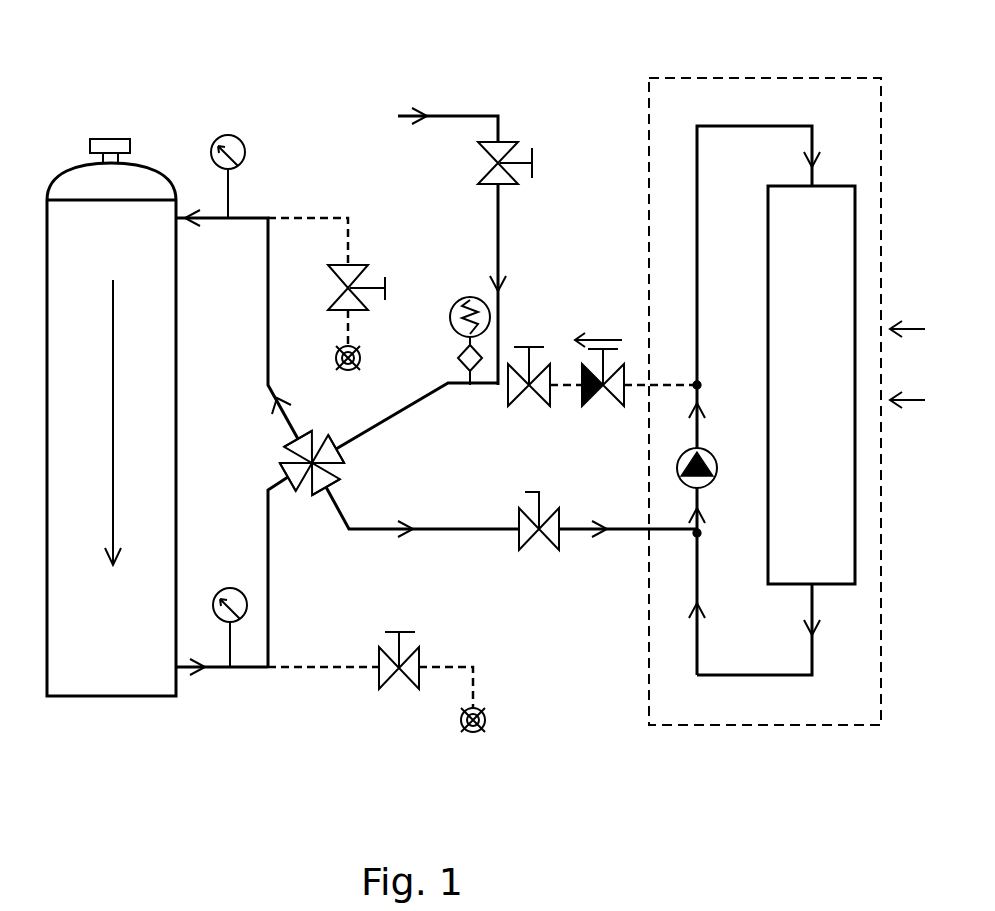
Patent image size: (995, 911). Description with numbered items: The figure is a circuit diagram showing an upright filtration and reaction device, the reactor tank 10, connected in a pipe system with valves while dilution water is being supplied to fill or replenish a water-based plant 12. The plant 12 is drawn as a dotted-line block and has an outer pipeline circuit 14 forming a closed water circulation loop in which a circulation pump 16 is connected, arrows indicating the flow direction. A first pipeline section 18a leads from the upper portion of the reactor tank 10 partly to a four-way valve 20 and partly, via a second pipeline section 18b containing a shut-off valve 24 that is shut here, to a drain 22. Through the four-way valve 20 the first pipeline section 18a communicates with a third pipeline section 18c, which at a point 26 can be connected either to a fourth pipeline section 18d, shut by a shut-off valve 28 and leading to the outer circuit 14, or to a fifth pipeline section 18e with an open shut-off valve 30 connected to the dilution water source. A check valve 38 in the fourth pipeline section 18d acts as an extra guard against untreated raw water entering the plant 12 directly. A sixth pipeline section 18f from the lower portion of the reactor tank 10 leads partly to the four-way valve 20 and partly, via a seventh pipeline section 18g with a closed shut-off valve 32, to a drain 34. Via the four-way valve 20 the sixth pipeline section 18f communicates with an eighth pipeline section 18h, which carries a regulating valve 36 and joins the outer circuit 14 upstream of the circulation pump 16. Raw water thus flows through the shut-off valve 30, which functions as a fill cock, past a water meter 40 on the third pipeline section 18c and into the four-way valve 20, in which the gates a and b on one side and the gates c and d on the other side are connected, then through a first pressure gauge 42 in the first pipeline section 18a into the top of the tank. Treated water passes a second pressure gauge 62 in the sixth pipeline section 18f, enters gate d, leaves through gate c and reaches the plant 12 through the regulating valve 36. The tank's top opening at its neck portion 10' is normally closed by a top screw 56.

The reactor tank 10 is at (139, 429).
The neck portion 10' is at (169, 104).
The top screw 56 is at (100, 138).
The first pressure gauge 42 is at (242, 145).
The second pressure gauge 62 is at (242, 587).
The first pipeline section 18a is at (267, 253).
The second pipeline section 18b is at (302, 216).
The third pipeline section 18c is at (398, 412).
The fourth pipeline section 18d is at (563, 383).
The fifth pipeline section 18e is at (473, 114).
The sixth pipeline section 18f is at (267, 553).
The seventh pipeline section 18g is at (292, 667).
The eighth pipeline section 18h is at (430, 529).
The shut-off valve 24 is at (368, 277).
The drain 22 is at (367, 362).
The water meter 40 is at (477, 297).
The point 26 is at (498, 392).
The shut-off valve 30 is at (522, 157).
The shut-off valve 28 is at (528, 345).
The check valve 38 is at (597, 337).
The regulating valve 36 is at (548, 518).
The shut-off valve 32 is at (393, 680).
The drain 34 is at (490, 723).
The four-way valve 20 is at (362, 478).
The gate a is at (313, 433).
The gate b is at (328, 434).
The gate c is at (320, 488).
The gate d is at (282, 470).
The circulation pump 16 is at (710, 458).
The outer pipeline circuit 14 is at (698, 653).
The water-based plant 12 is at (689, 725).